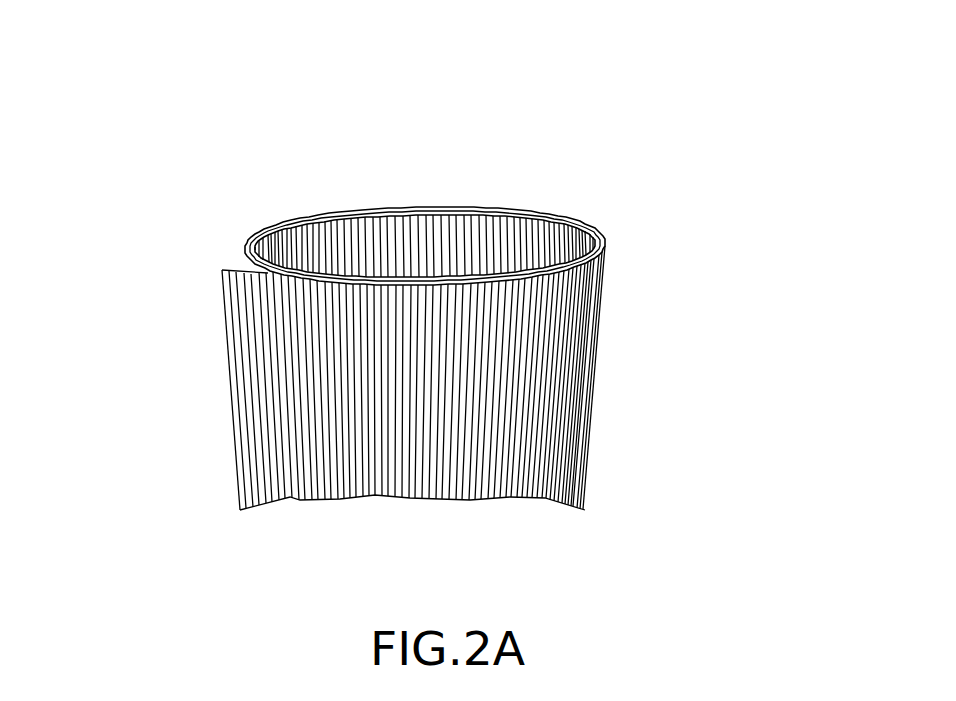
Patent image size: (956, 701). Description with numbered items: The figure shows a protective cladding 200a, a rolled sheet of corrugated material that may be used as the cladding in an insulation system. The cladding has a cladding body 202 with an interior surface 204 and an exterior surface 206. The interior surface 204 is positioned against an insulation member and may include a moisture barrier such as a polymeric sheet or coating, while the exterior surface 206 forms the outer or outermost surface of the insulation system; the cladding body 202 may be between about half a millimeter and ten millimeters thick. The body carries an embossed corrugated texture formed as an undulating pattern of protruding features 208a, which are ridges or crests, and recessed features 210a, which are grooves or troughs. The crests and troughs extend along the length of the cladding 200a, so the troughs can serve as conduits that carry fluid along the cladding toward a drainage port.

The protective cladding 200a is at (104, 114).
The cladding body 202 is at (261, 363).
The interior surface 204 is at (432, 248).
The exterior surface 206 is at (292, 442).
The protruding features 208a is at (458, 212).
The recessed features 210a is at (486, 214).